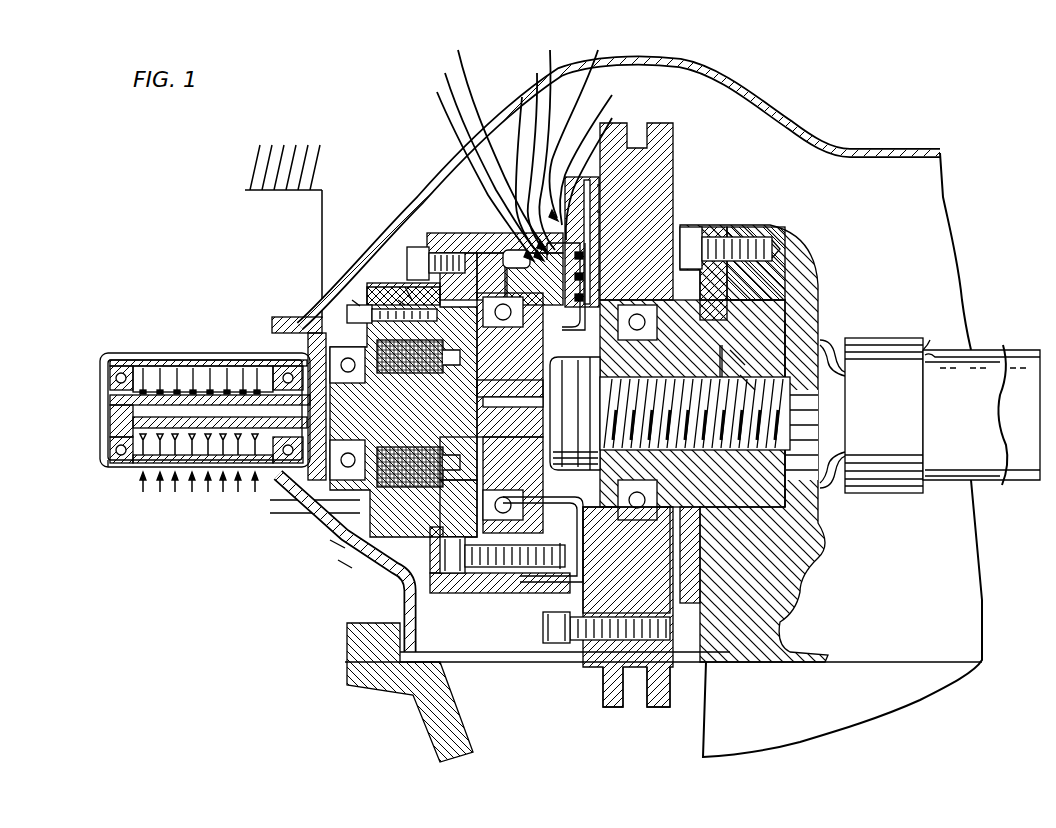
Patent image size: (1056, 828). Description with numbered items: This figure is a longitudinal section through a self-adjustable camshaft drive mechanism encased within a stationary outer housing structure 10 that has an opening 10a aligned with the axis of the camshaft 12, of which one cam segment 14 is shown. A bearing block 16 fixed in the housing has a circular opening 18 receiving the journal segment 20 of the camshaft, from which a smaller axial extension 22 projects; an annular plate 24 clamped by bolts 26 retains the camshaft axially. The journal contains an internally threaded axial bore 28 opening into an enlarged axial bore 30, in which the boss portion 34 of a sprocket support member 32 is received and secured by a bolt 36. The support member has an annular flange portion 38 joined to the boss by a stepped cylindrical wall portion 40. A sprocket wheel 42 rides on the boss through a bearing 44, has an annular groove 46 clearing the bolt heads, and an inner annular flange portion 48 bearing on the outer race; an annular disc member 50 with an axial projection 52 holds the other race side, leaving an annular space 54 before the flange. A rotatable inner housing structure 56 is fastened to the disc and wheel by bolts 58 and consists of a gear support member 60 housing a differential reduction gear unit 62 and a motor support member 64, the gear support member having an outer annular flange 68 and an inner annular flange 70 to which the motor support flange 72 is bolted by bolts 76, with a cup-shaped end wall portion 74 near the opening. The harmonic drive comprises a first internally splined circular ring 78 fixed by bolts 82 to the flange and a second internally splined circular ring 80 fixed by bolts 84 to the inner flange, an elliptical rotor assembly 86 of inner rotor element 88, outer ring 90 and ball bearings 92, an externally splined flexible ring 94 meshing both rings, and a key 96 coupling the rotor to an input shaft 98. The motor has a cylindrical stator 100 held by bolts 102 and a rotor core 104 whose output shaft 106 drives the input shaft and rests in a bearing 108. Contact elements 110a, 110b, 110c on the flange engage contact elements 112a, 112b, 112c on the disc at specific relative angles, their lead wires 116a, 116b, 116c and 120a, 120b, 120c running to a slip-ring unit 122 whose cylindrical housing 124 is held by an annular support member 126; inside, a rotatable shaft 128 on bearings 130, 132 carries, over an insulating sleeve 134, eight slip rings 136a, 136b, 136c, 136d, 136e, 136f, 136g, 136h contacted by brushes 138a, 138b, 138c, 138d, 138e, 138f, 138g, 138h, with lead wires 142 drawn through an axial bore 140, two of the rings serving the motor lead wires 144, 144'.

The stationary outer housing structure 10 is at (767, 102).
The opening 10a is at (283, 318).
The camshaft 12 is at (948, 340).
The cam segment 14 is at (895, 496).
The bearing block 16 is at (826, 595).
The circular opening 18 is at (820, 520).
The journal segment 20 is at (822, 306).
The axial extension 22 is at (699, 546).
The annular plate 24 is at (713, 228).
The bolts 26 is at (752, 228).
The internally threaded axial bore 28 is at (740, 480).
The enlarged axial bore 30 is at (720, 489).
The sprocket support member 32 is at (606, 478).
The boss portion 34 is at (732, 350).
The bolt 36 is at (742, 375).
The annular flange portion 38 is at (545, 260).
The stepped cylindrical wall portion 40 is at (660, 377).
The sprocket wheel 42 is at (672, 168).
The bearing 44 is at (720, 370).
The annular groove 46 is at (692, 228).
The inner annular flange portion 48 is at (660, 326).
The annular disc member 50 is at (612, 642).
The axial projection 52 is at (612, 326).
The annular space 54 is at (600, 560).
The rotatable inner housing structure 56 is at (382, 664).
The bolts 58 is at (648, 690).
The gear support member 60 is at (450, 234).
The differential reduction gear unit 62 is at (440, 250).
The motor support member 64 is at (428, 240).
The outer annular flange 68 is at (560, 645).
The inner annular flange 70 is at (395, 285).
The annular flange 72 is at (410, 285).
The cup-shaped end wall portion 74 is at (355, 300).
The bolts 76 is at (400, 300).
The first internally splined circular ring 78 is at (520, 572).
The second internally splined circular ring 80 is at (490, 576).
The bolts 82 is at (530, 646).
The bolts 84 is at (437, 595).
The elliptical rotor assembly 86 is at (478, 362).
The inner rotor element 88 is at (486, 373).
The outer ring 90 is at (578, 540).
The ball bearings 92 is at (480, 500).
The externally splined flexible ring 94 is at (478, 522).
The key 96 is at (513, 485).
The input shaft 98 is at (491, 423).
The cylindrical stator 100 is at (400, 560).
The bolts 102 is at (370, 306).
The rotor core 104 is at (412, 410).
The output shaft 106 is at (403, 418).
The bearing 108 is at (355, 413).
The contact element 110a is at (479, 138).
The contact element 110b is at (467, 151).
The contact element 110c is at (458, 167).
The contact element 112a is at (598, 190).
The contact element 112b is at (598, 215).
The contact element 112c is at (598, 291).
The lead wire 116a is at (539, 138).
The lead wire 116b is at (525, 152).
The lead wire 116c is at (513, 167).
The lead wire 120a is at (599, 123).
The lead wire 120b is at (608, 150).
The lead wire 120c is at (612, 170).
The slip-ring unit 122 is at (131, 255).
The cylindrical housing 124 is at (104, 357).
The annular support member 126 is at (340, 515).
The rotatable shaft 128 is at (110, 378).
The bearing 130 is at (106, 470).
The bearing 132 is at (330, 520).
The cylindrical insulating sleeve 134 is at (110, 452).
The slip ring 136a is at (143, 388).
The slip ring 136b is at (160, 388).
The slip ring 136c is at (177, 388).
The slip ring 136d is at (193, 388).
The slip ring 136e is at (210, 388).
The slip ring 136f is at (227, 388).
The slip ring 136g is at (243, 388).
The slip ring 136h is at (257, 388).
The brush 138a is at (140, 494).
The brush 138b is at (158, 494).
The brush 138c is at (173, 494).
The brush 138d is at (190, 494).
The brush 138e is at (207, 494).
The brush 138f is at (222, 494).
The brush 138g is at (237, 494).
The brush 138h is at (254, 494).
The axial bore 140 is at (110, 412).
The lead wires 142 is at (135, 422).
The lead wire 144 is at (302, 594).
The lead wire 144' is at (309, 616).